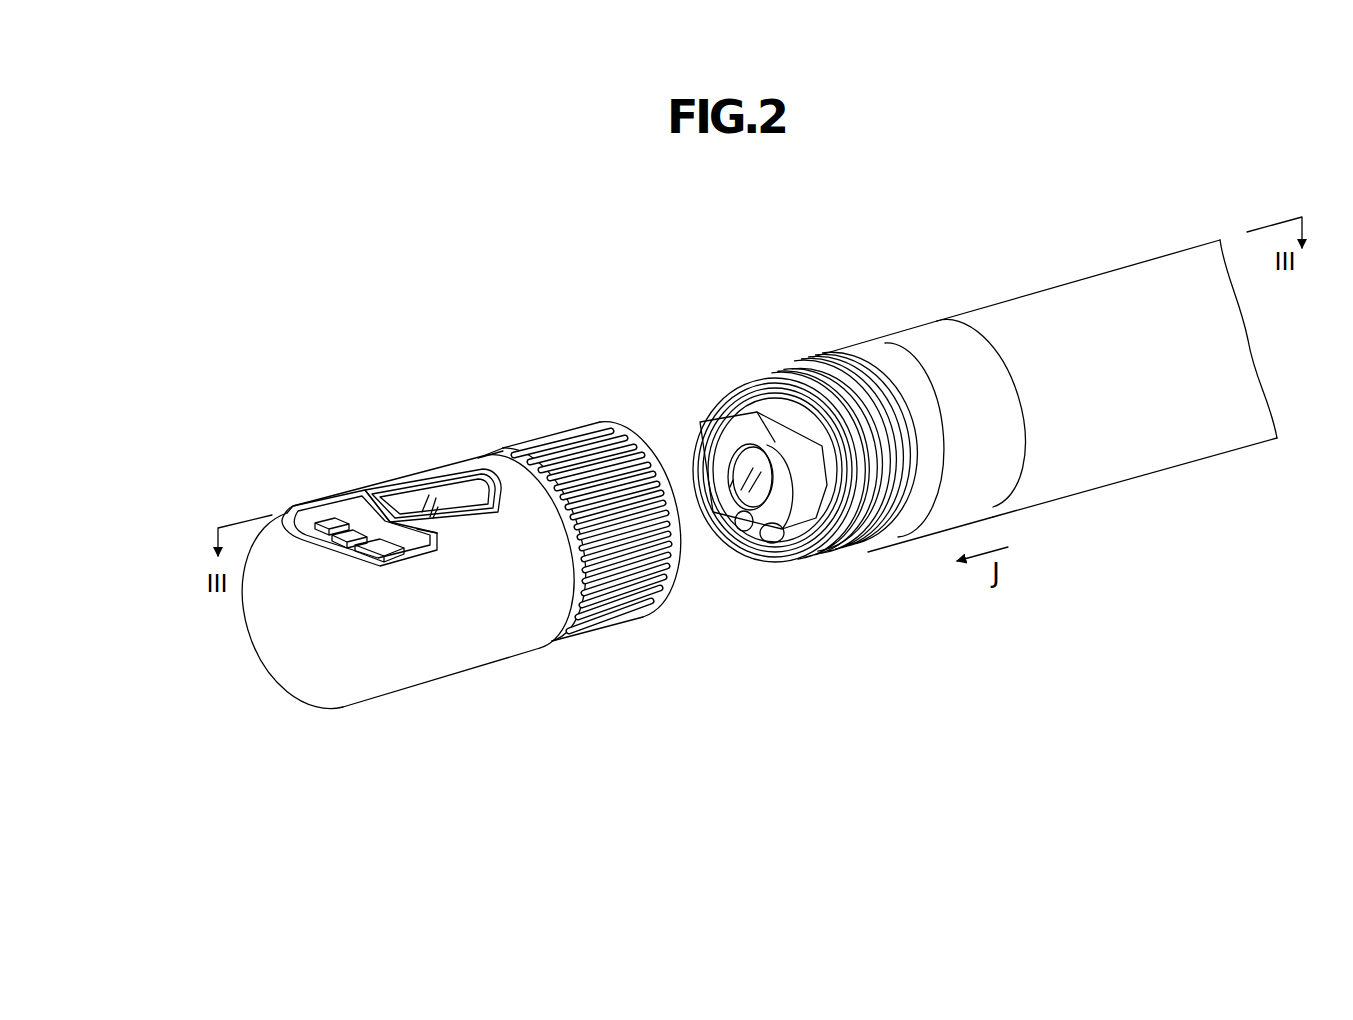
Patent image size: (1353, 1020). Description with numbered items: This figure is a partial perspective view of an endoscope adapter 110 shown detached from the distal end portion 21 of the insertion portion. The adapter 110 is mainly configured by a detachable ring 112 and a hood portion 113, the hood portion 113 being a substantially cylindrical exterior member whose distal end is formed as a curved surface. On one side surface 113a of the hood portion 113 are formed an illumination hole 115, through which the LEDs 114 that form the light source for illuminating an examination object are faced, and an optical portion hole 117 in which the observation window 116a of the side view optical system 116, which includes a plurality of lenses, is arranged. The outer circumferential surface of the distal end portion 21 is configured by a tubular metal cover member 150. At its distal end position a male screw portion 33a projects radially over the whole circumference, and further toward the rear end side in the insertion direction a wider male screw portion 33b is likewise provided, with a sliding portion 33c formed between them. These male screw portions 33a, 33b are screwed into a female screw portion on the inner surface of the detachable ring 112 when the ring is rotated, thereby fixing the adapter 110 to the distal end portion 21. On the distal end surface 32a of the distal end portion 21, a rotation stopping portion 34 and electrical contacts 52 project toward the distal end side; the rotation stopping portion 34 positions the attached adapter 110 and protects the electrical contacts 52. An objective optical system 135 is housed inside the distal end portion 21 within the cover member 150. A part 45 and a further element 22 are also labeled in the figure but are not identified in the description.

The adapter 110 is at (208, 549).
The hood portion 113 is at (300, 657).
The side surface 113a is at (479, 453).
The illumination hole 115 is at (303, 504).
The LEDs 114 is at (340, 396).
The side view optical system 116 is at (391, 457).
The observation window 116a is at (412, 493).
The optical portion hole 117 is at (442, 490).
The detachable ring 112 is at (560, 440).
The distal end portion 21 is at (785, 343).
The cover member 150 is at (790, 375).
The distal end surface 32a is at (801, 539).
The rotation stopping portion 34 is at (712, 455).
The lens holder 45 is at (728, 489).
The electrical contacts 52 is at (742, 527).
The male screw portion 33a is at (803, 392).
The male screw portion 33b is at (878, 387).
The sliding portion 33c is at (848, 397).
The objective optical system 135 is at (873, 522).
The cable 22 is at (1112, 285).